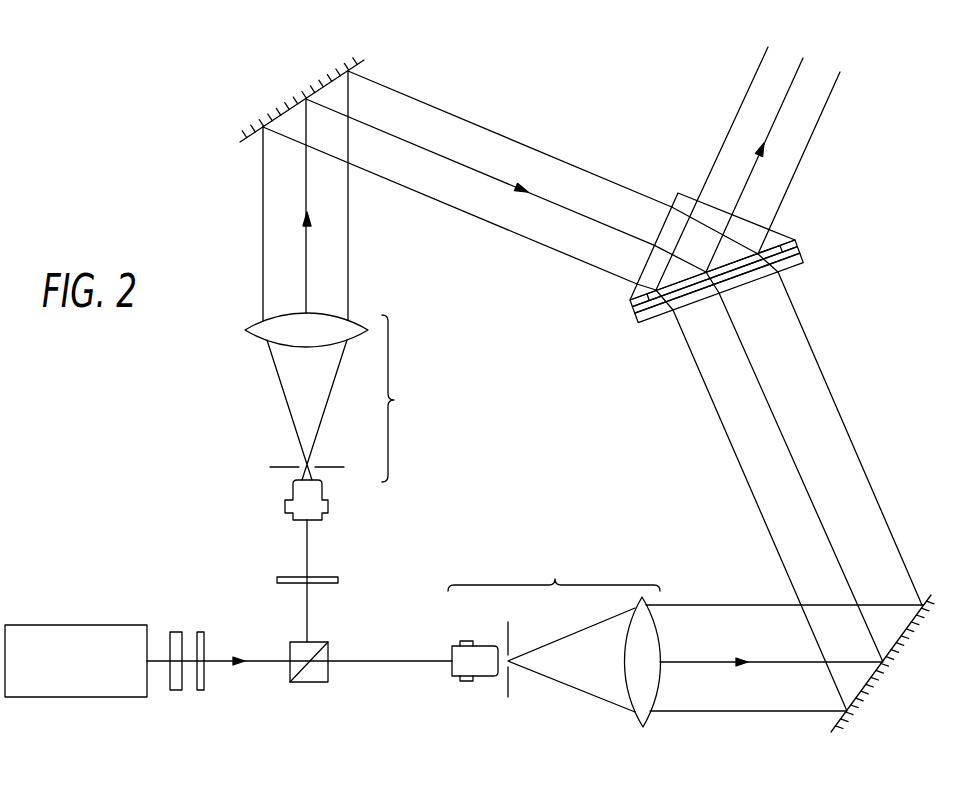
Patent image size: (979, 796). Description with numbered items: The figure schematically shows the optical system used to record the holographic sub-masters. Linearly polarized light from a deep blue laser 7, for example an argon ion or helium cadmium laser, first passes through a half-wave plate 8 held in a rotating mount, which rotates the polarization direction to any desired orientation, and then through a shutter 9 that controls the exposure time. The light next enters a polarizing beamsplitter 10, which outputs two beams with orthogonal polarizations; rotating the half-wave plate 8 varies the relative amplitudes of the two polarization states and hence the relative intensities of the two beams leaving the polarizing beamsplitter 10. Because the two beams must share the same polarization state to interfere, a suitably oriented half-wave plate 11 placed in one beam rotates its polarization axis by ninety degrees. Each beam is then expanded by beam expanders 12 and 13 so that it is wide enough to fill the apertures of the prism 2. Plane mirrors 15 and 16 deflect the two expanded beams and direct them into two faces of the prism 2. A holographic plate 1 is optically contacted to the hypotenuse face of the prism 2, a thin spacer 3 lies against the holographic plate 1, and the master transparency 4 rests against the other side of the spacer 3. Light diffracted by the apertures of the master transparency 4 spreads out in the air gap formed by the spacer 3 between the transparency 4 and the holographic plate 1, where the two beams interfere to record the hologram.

The holographic plate 1 is at (795, 240).
The 45 degree prism 2 is at (678, 193).
The thin spacer 3 is at (798, 250).
The master transparency 4 is at (801, 261).
The deep blue laser 7 is at (70, 633).
The half-wave plate 8 is at (202, 687).
The shutter 9 is at (173, 637).
The polarizing beamsplitter 10 is at (322, 653).
The half-wave plate 11 is at (333, 580).
The beam expander 12 is at (337, 416).
The beam expander 13 is at (554, 637).
The plane mirror 15 is at (364, 60).
The plane mirror 16 is at (931, 595).